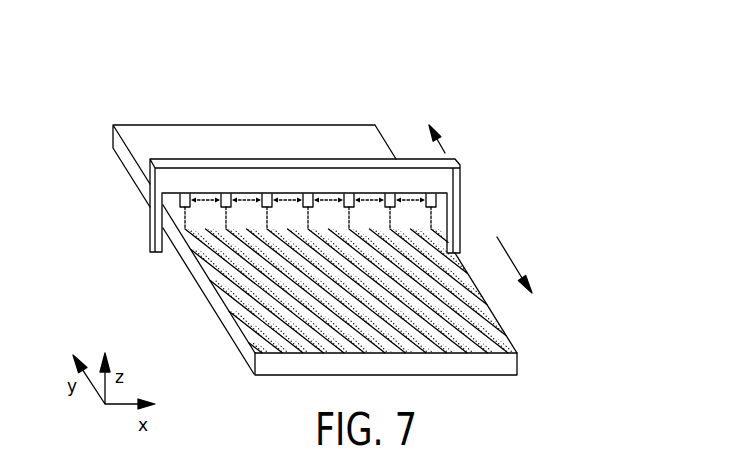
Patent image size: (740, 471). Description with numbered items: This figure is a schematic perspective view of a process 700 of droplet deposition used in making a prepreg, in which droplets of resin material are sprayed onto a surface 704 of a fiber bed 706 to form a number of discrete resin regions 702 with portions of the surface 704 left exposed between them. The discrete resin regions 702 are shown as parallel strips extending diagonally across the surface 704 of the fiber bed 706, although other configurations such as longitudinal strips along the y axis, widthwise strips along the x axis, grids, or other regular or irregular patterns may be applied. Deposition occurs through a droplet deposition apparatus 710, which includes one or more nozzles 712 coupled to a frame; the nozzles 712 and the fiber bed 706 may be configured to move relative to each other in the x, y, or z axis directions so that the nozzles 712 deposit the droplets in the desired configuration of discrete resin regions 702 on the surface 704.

The process 700 is at (303, 87).
The discrete resin regions 702 is at (210, 262).
The surface 704 is at (513, 319).
The fiber bed 706 is at (240, 352).
The droplet deposition apparatus 710 is at (404, 158).
The nozzles 712 is at (180, 200).